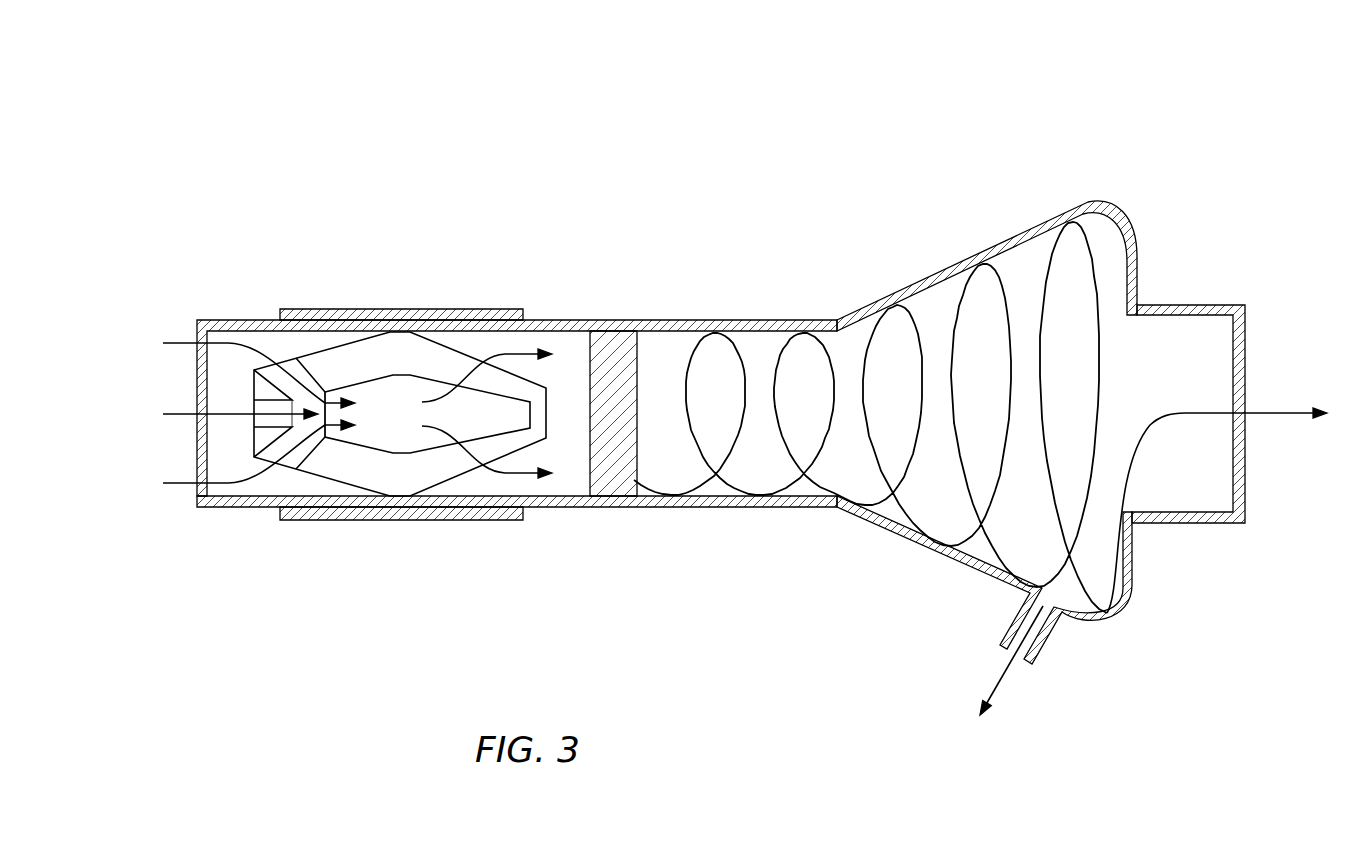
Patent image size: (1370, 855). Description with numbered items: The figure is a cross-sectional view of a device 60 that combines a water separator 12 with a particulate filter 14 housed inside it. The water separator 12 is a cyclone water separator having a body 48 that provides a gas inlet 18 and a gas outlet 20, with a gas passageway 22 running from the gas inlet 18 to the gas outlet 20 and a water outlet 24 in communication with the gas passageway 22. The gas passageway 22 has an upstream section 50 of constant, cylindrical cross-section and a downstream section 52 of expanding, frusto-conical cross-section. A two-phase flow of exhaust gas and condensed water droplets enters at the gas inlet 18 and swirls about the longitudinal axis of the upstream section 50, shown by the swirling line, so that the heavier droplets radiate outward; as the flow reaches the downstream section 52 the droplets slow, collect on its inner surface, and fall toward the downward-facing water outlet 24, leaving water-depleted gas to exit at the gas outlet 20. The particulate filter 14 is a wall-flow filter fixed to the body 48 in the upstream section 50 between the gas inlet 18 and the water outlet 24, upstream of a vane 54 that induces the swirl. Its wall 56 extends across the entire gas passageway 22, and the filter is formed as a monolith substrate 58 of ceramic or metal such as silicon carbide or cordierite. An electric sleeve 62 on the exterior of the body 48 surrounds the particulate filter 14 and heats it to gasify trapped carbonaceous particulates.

The water separator 12 is at (790, 293).
The particulate filter 14 is at (294, 481).
The gas inlet 18 is at (161, 456).
The gas outlet 20 is at (1272, 479).
The gas passageway 22 is at (563, 342).
The water outlet 24 is at (1015, 647).
The body 48 is at (702, 506).
The upstream section 50 is at (559, 563).
The downstream section 52 is at (1013, 209).
The vane 54 is at (612, 340).
The wall 56 is at (441, 362).
The monolith substrate 58 is at (355, 363).
The device 60 is at (404, 223).
The sleeve 62 is at (313, 520).